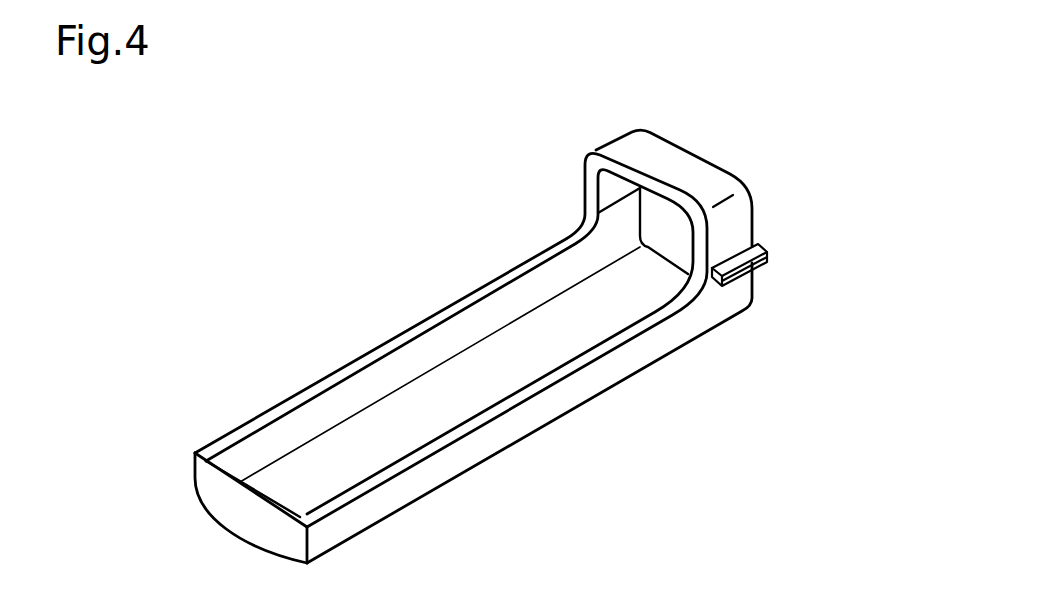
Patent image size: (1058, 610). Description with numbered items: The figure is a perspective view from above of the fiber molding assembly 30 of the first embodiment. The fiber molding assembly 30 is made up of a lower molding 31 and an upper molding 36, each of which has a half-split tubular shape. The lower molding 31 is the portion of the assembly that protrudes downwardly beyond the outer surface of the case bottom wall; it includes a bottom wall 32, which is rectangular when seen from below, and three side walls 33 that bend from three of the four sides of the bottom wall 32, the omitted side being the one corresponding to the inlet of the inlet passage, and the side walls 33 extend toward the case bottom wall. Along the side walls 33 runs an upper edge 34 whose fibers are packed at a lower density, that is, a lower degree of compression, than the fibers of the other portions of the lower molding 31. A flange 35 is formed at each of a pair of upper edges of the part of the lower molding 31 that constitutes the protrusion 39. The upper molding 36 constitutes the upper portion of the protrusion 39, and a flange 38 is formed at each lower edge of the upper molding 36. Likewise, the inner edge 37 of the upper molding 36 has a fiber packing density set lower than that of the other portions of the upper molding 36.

The fiber molding assembly 30 is at (300, 208).
The lower molding 31 is at (660, 362).
The bottom wall 32 is at (462, 384).
The side walls 33 is at (355, 396).
The upper edge 34 is at (498, 284).
The flange 35 is at (760, 275).
The upper molding 36 is at (701, 145).
The inner edge 37 is at (631, 173).
The flange 38 is at (756, 250).
The protrusion 39 is at (657, 145).